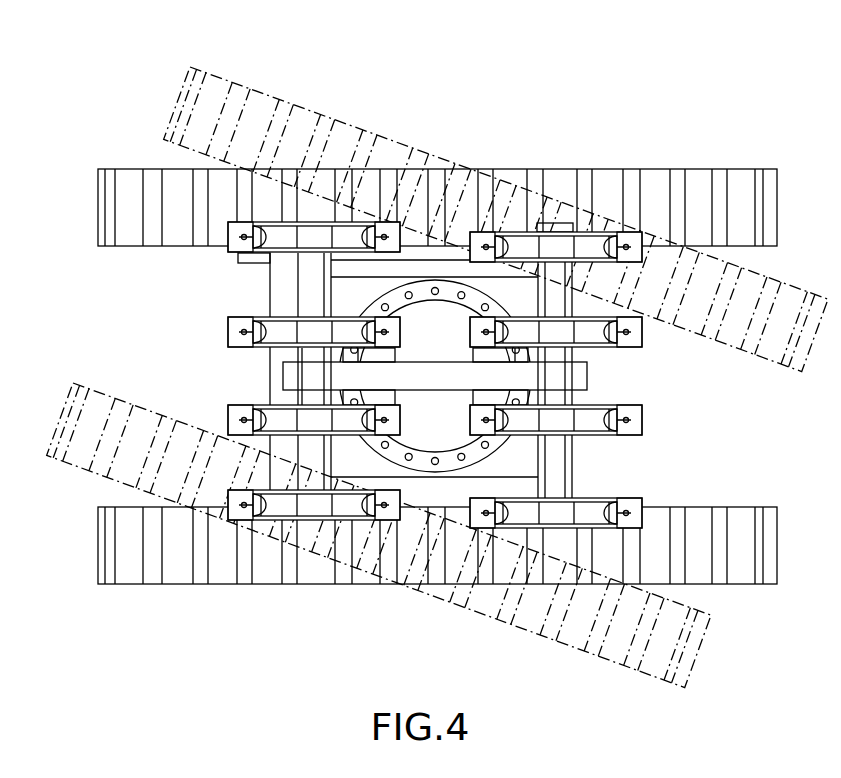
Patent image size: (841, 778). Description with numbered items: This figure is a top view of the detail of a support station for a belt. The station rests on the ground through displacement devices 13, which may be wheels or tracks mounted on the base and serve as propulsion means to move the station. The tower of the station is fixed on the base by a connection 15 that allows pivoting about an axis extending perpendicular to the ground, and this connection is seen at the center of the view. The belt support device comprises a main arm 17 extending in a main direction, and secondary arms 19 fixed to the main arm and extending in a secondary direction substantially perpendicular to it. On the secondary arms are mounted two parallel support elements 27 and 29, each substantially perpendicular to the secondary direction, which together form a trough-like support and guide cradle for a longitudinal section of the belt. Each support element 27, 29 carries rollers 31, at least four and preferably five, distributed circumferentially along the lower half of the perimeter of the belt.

The displacement device 13 is at (694, 170).
The connection 15 is at (437, 327).
The main arm 17 is at (431, 398).
The secondary arm 19 is at (312, 277).
The support element 27 is at (218, 412).
The support element 29 is at (222, 497).
The roller 31 is at (357, 213).